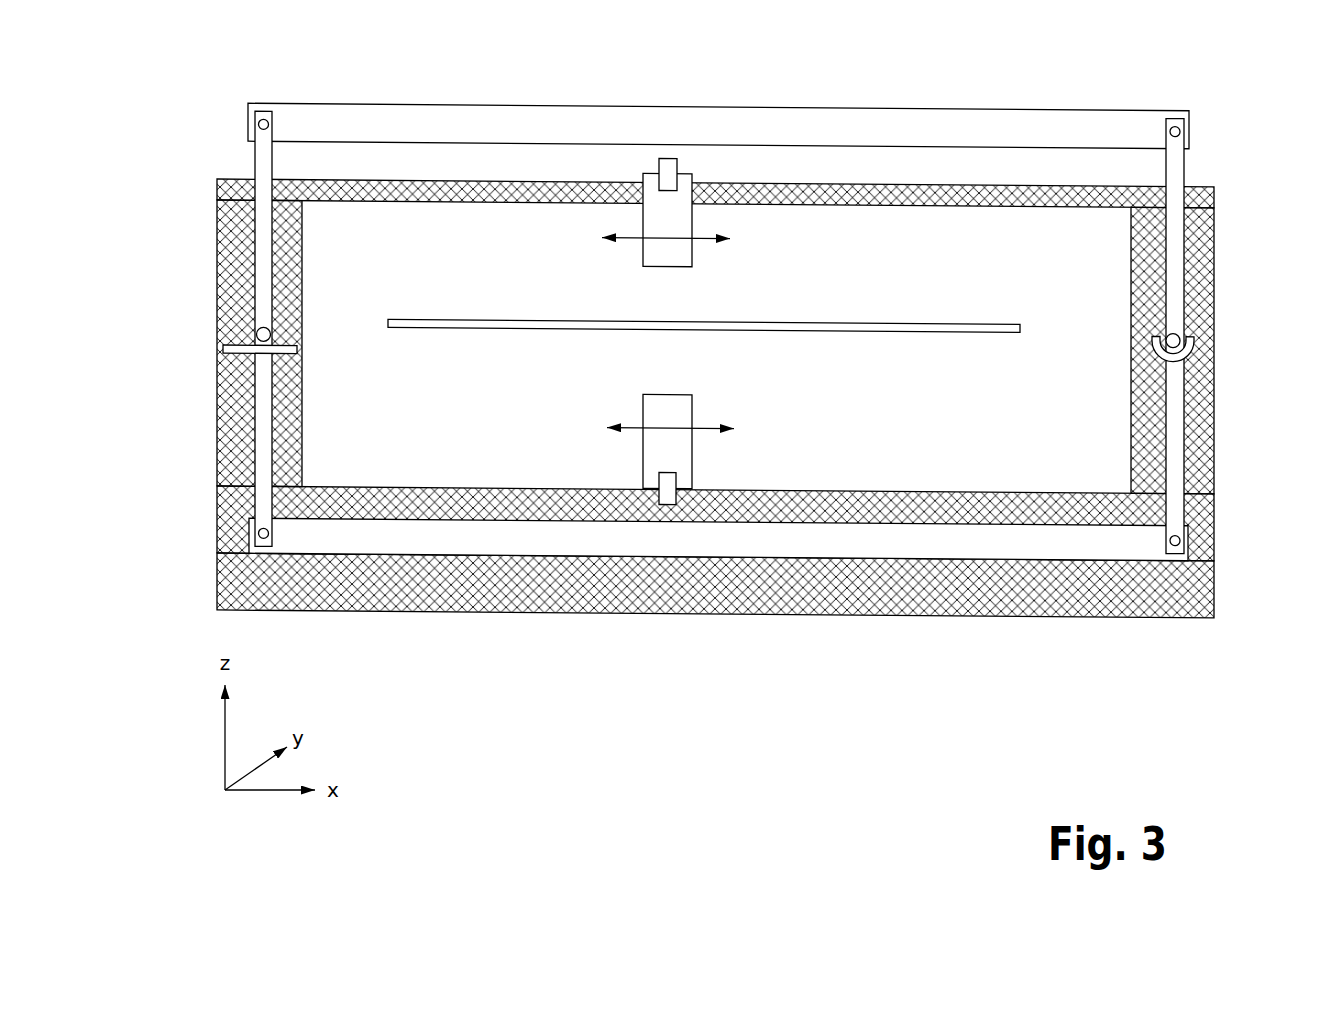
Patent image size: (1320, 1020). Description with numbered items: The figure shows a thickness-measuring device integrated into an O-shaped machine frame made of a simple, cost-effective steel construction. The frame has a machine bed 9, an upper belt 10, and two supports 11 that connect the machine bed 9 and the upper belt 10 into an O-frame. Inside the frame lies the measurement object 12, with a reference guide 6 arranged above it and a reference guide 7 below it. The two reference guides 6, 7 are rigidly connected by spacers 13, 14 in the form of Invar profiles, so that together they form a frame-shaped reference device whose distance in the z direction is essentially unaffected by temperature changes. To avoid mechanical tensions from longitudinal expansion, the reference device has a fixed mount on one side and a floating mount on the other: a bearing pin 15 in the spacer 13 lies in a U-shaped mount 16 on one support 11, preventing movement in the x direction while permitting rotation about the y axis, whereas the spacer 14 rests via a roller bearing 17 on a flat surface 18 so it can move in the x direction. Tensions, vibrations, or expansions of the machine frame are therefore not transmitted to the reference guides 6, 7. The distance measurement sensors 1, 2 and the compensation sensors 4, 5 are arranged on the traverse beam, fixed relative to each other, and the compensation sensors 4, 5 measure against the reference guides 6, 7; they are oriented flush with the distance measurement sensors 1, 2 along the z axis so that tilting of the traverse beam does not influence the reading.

The distance measurement sensor 1 is at (650, 210).
The distance measurement sensor 2 is at (683, 452).
The compensation sensor 4 is at (667, 155).
The compensation sensor 5 is at (660, 493).
The reference guide 6 is at (1078, 117).
The reference guide 7 is at (885, 540).
The machine bed 9 is at (1083, 600).
The upper belt 10 is at (925, 190).
The support 11 is at (227, 446).
The measurement object 12 is at (450, 316).
The spacer 13 is at (1175, 232).
The spacer 14 is at (258, 242).
The bearing pin 15 is at (1180, 333).
The U-shaped mount 16 is at (1182, 355).
The roller bearing 17 is at (243, 332).
The flat surface 18 is at (225, 355).